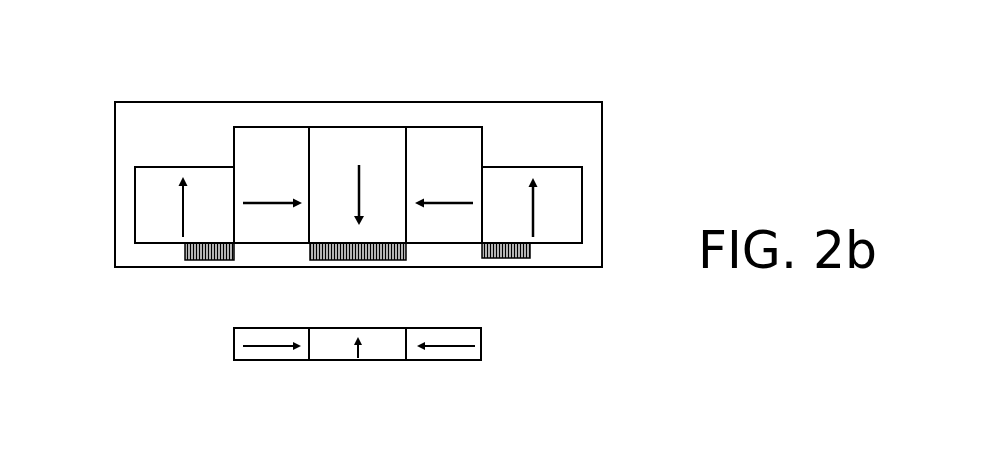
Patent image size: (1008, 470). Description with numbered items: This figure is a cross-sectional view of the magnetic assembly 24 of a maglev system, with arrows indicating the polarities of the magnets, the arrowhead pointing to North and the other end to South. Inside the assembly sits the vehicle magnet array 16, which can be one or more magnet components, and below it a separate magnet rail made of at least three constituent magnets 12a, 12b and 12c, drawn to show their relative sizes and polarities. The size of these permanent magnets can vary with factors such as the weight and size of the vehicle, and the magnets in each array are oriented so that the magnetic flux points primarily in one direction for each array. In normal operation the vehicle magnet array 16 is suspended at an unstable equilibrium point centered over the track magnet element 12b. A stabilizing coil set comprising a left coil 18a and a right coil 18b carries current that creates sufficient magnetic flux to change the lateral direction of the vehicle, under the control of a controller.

The magnetic assembly 24 is at (175, 133).
The vehicle magnet array 16 is at (262, 133).
The left coil 18a is at (308, 253).
The right coil 18b is at (408, 253).
The constituent magnet 12a is at (273, 355).
The track magnet element 12b is at (358, 355).
The constituent magnet 12c is at (443, 355).